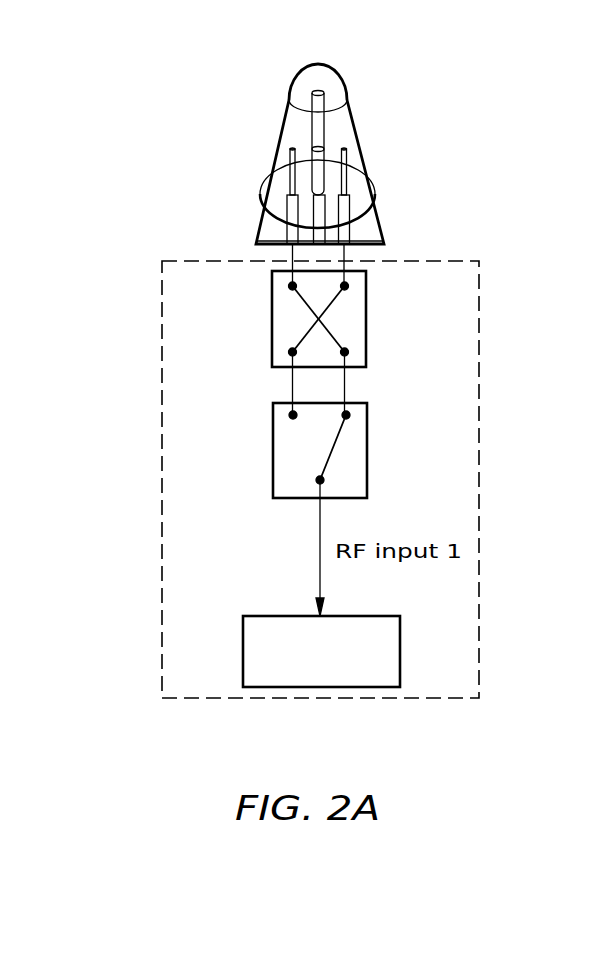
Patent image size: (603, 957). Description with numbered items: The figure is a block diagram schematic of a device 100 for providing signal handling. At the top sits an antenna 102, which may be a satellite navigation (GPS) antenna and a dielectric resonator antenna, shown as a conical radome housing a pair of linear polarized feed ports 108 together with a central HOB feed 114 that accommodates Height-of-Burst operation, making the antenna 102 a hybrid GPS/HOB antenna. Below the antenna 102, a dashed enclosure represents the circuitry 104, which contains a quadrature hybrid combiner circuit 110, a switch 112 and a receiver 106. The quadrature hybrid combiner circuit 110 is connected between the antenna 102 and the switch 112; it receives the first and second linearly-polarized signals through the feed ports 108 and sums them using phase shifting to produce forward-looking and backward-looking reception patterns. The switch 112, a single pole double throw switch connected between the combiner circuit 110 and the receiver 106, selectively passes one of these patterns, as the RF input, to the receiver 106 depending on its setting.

The device 100 is at (242, 80).
The antenna 102 is at (365, 80).
The circuitry 104 is at (495, 597).
The receiver 106 is at (341, 678).
The linear polarized feed ports 108 is at (290, 193).
The quadrature hybrid combiner circuit 110 is at (357, 310).
The switch 112 is at (285, 483).
The HOB feed 114 is at (318, 182).